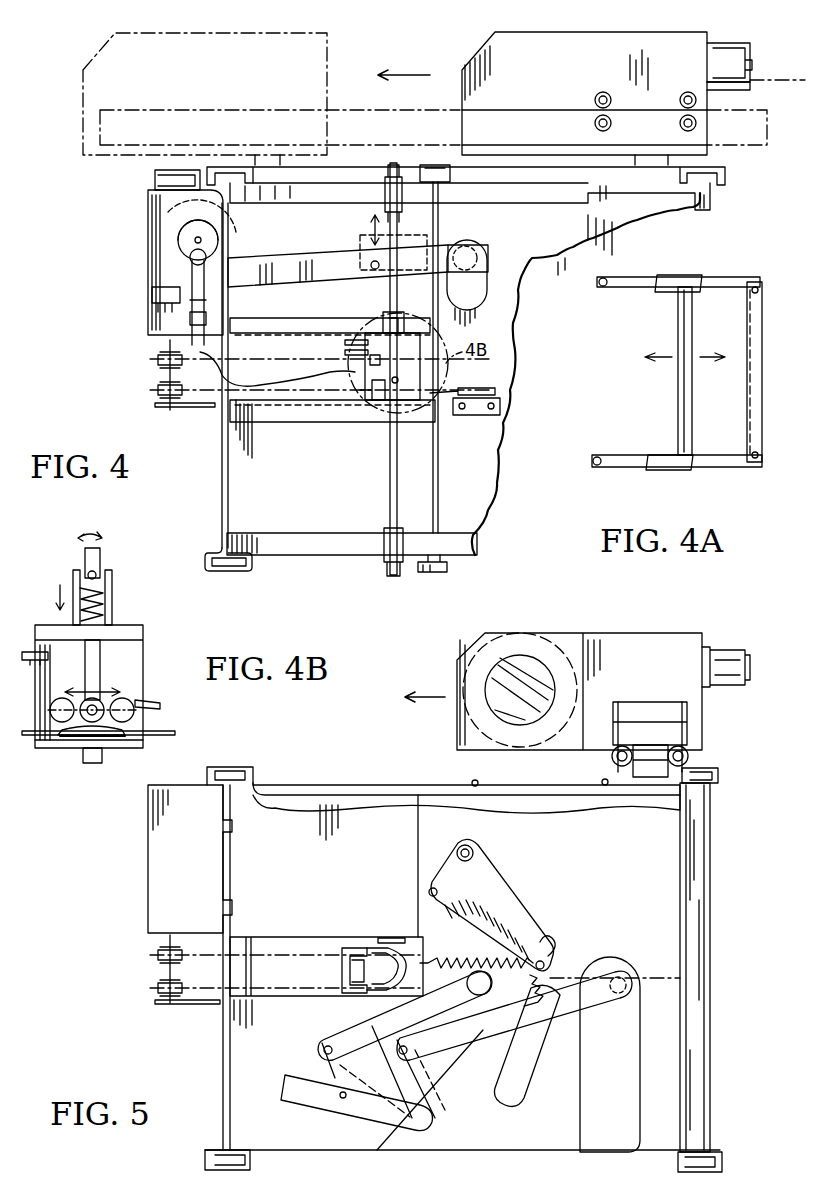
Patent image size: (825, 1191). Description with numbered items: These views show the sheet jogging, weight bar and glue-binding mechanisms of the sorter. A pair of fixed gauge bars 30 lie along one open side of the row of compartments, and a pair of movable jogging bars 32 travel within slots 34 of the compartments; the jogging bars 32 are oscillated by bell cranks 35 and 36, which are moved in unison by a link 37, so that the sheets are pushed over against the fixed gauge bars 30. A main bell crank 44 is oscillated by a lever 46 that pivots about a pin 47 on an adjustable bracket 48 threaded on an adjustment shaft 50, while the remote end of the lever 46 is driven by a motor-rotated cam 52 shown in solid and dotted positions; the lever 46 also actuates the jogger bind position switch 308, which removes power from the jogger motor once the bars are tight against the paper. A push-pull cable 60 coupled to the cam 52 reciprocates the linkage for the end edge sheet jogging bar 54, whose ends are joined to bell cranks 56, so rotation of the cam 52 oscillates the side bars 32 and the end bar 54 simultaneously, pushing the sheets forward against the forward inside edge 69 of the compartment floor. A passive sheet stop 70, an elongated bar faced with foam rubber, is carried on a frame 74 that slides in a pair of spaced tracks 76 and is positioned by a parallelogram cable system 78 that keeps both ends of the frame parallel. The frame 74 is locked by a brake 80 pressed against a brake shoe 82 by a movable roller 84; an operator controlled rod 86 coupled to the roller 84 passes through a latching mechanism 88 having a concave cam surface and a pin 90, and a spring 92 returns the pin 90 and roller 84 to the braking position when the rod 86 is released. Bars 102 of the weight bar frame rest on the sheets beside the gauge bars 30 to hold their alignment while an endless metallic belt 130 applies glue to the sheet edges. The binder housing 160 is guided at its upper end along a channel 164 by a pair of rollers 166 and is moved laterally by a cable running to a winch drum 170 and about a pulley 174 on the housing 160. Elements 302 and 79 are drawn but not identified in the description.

In FIG. 4, the housing 160 is at (470, 47).
In FIG. 4, the channel 164 is at (530, 110).
In FIG. 4, the rollers 166 is at (595, 118).
In FIG. 4, the winch drum 170 is at (742, 45).
In FIG. 5, the winch drum 170 is at (728, 650).
In FIG. 4, the pulley 174 is at (745, 88).
In FIG. 4, the drive motor 302 is at (182, 175).
In FIG. 4, the cam 52 is at (178, 242).
In FIG. 4, the jogger bind position switch 308 is at (152, 293).
In FIG. 4, the lever 46 is at (305, 258).
In FIG. 4, the pin 47 is at (370, 262).
In FIG. 4, the adjustable bracket 48 is at (437, 240).
In FIG. 4, the tracks 76 is at (283, 318).
In FIG. 4, the operator controlled rod 86 is at (388, 297).
In FIG. 4B, the operator controlled rod 86 is at (100, 560).
In FIG. 4, the pulley 79 is at (165, 356).
In FIG. 4A, the pulley 79 is at (762, 372).
In FIG. 4B, the pulley 79 is at (25, 652).
In FIG. 5, the pulley 79 is at (185, 950).
In FIG. 4, the push-pull cable 60 is at (170, 385).
In FIG. 4, the parallelogram cable system 78 is at (198, 407).
In FIG. 4A, the parallelogram cable system 78 is at (762, 320).
In FIG. 4B, the parallelogram cable system 78 is at (178, 732).
In FIG. 5, the parallelogram cable system 78 is at (200, 1003).
In FIG. 4, the frame 74 is at (380, 405).
In FIG. 4A, the frame 74 is at (685, 277).
In FIG. 4B, the frame 74 is at (75, 745).
In FIG. 5, the frame 74 is at (345, 968).
In FIG. 4, the adjustment shaft 50 is at (447, 568).
In FIG. 4A, the passive sheet stop 70 is at (678, 395).
In FIG. 5, the passive sheet stop 70 is at (375, 996).
In FIG. 4B, the pin 90 is at (97, 575).
In FIG. 4B, the spring 92 is at (112, 605).
In FIG. 4B, the latching mechanism 88 is at (105, 640).
In FIG. 4B, the movable roller 84 is at (125, 692).
In FIG. 4B, the brake shoe 82 is at (72, 737).
In FIG. 4B, the brake 80 is at (125, 740).
In FIG. 5, the endless metallic belt 130 is at (690, 735).
In FIG. 5, the bars 102 is at (395, 785).
In FIG. 5, the fixed gauge bars 30 is at (472, 780).
In FIG. 5, the main bell crank 44 is at (500, 880).
In FIG. 5, the movable jogging bars 32 is at (625, 978).
In FIG. 5, the forward inside edge 69 is at (680, 1046).
In FIG. 5, the slots 34 is at (638, 1085).
In FIG. 5, the bell crank 35 is at (448, 1087).
In FIG. 5, the bell crank 36 is at (320, 1060).
In FIG. 5, the link 37 is at (370, 1115).
In FIG. 5, the bell cranks 56 is at (362, 945).
In FIG. 5, the end edge sheet jogging bar 54 is at (395, 938).